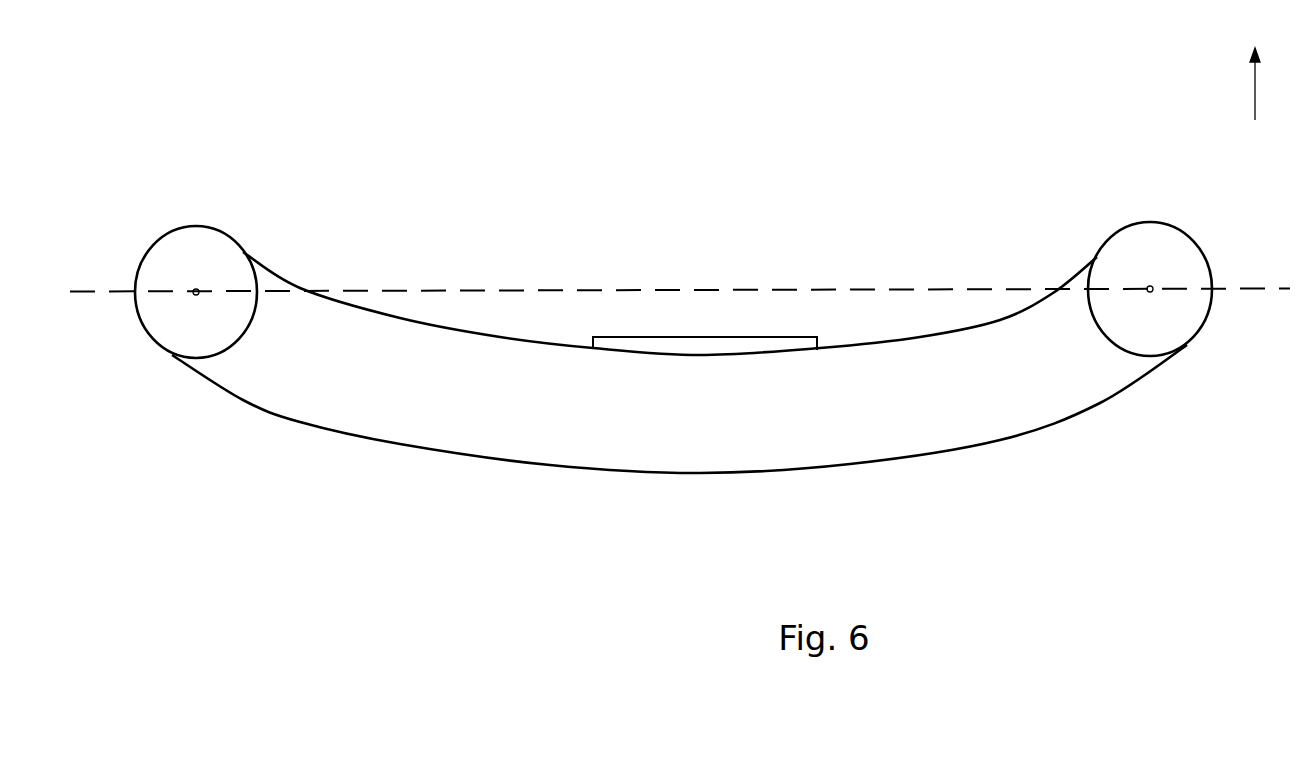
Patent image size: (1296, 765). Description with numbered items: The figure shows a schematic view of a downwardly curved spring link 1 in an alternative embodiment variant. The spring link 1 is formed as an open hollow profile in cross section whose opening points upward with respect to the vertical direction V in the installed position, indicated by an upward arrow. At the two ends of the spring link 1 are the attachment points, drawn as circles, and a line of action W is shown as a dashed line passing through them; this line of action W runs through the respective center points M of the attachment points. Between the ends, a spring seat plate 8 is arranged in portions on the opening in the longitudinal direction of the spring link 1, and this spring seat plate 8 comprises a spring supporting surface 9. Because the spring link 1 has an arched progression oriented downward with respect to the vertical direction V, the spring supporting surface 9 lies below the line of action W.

The spring link 1 is at (335, 512).
The spring seat plate 8 is at (772, 343).
The spring supporting surface 9 is at (695, 325).
The center points of the attachment points M is at (195, 295).
The line of action W is at (963, 288).
The vertical direction V is at (1262, 84).